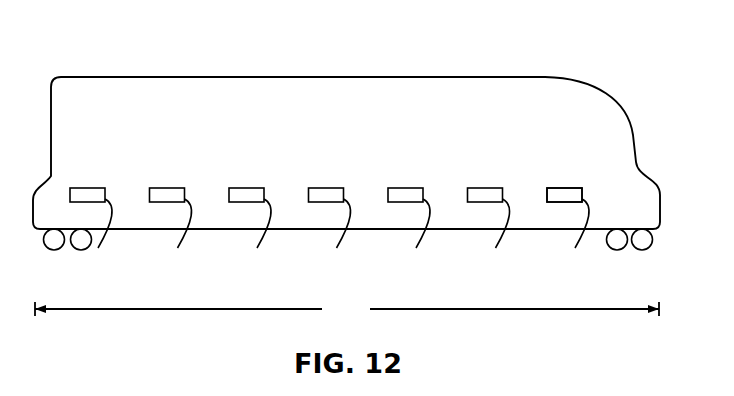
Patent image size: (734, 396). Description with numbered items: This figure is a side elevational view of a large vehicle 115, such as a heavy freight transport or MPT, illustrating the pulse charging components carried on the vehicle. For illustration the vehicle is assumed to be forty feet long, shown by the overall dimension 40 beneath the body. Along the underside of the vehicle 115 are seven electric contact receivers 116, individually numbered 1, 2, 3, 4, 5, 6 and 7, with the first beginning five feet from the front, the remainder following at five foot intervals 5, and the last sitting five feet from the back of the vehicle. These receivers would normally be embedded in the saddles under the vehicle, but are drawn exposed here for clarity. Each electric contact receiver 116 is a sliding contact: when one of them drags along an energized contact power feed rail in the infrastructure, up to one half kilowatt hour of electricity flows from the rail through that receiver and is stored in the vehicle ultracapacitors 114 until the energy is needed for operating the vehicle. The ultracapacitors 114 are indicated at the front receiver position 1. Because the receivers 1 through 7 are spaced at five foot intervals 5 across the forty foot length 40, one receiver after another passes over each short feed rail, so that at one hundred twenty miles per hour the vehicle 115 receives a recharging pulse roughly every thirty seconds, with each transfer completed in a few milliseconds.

The vehicle 115 is at (135, 74).
The ultracapacitors 114 is at (563, 186).
The electric contact receivers 116 is at (597, 259).
The vehicle length 40 is at (347, 310).
The five foot interval 5 is at (336, 241).
The electric contact receiver 1 is at (568, 218).
The electric contact receiver 2 is at (489, 218).
The electric contact receiver 3 is at (409, 218).
The electric contact receiver 4 is at (330, 218).
The electric contact receiver 6 is at (171, 218).
The electric contact receiver 7 is at (91, 218).